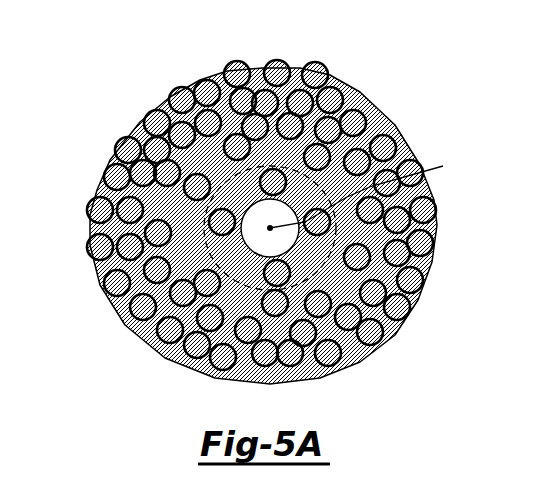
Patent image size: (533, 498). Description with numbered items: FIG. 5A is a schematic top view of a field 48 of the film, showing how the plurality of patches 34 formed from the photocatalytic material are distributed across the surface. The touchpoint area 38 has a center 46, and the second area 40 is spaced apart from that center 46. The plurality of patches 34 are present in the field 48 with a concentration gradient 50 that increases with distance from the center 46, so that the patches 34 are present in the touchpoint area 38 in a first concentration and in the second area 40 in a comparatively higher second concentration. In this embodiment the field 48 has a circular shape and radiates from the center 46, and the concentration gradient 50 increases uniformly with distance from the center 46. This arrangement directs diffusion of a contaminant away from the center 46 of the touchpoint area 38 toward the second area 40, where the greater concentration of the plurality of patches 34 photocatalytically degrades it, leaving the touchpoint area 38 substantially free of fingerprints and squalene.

The plurality of patches 34 is at (277, 61).
The touchpoint area 38 is at (318, 184).
The second area 40 is at (167, 105).
The center 46 is at (368, 194).
The field 48 is at (263, 209).
The concentration gradient 50 is at (263, 209).